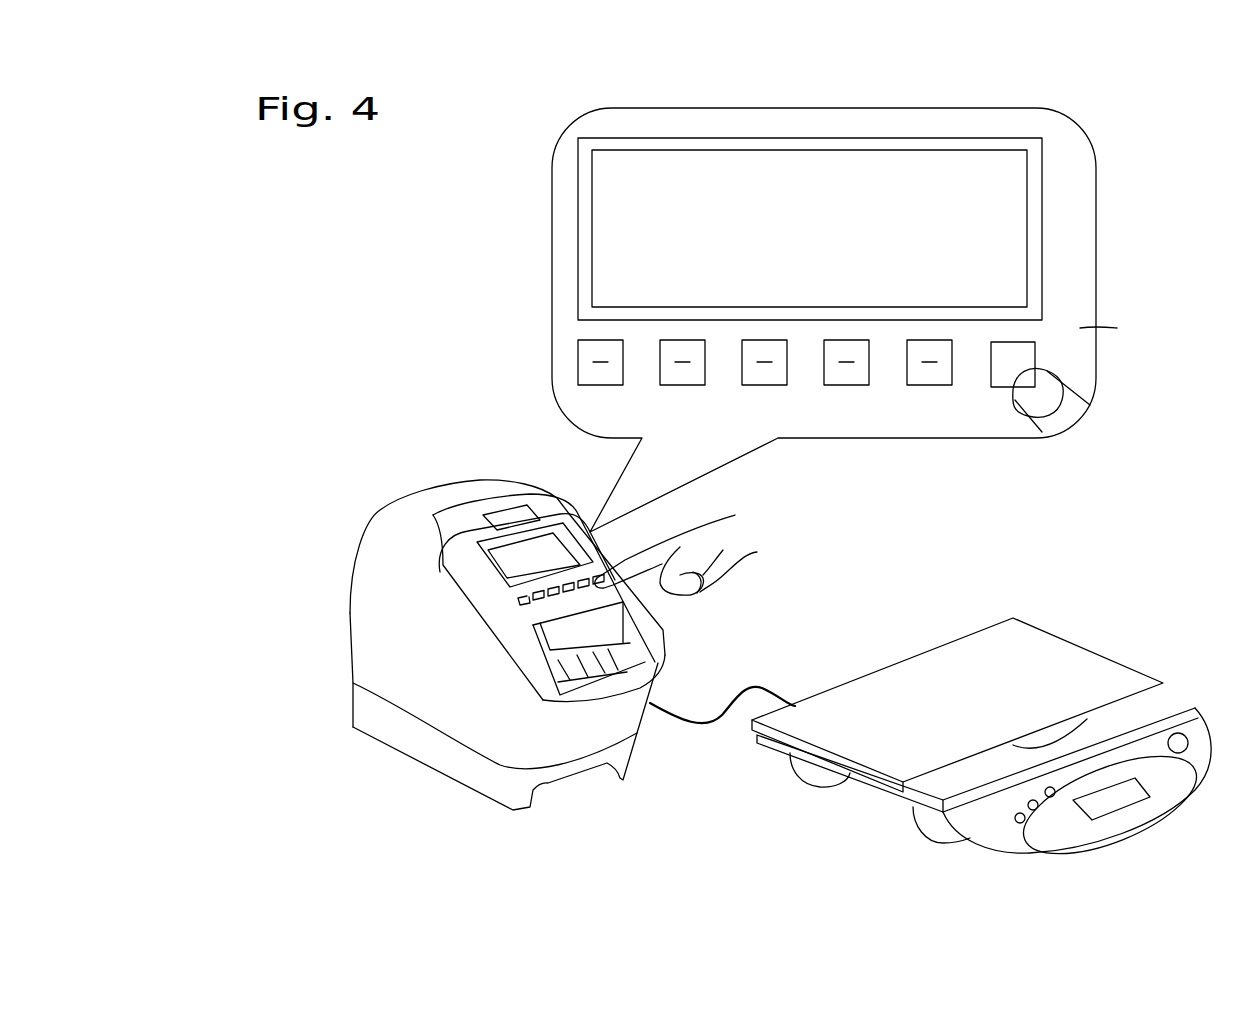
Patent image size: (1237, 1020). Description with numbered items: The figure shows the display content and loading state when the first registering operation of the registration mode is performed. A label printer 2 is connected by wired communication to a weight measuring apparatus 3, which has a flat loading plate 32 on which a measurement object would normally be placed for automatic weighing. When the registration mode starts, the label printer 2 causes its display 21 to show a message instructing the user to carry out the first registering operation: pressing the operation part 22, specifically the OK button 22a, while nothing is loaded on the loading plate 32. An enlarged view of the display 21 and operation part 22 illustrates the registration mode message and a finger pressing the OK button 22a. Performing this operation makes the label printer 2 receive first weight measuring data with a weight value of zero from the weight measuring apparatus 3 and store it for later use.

The label printer 2 is at (345, 567).
The display 21 is at (608, 196).
The operation part 22 is at (517, 598).
The OK button 22a is at (1030, 348).
The weight measuring apparatus 3 is at (981, 699).
The loading plate 32 is at (950, 663).